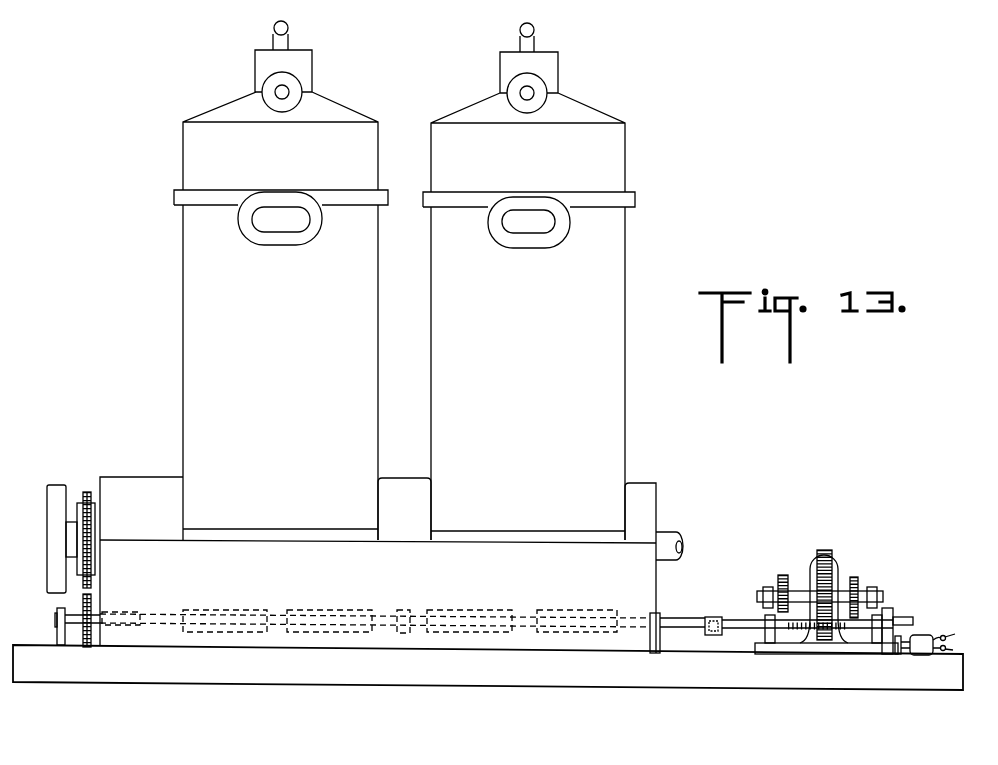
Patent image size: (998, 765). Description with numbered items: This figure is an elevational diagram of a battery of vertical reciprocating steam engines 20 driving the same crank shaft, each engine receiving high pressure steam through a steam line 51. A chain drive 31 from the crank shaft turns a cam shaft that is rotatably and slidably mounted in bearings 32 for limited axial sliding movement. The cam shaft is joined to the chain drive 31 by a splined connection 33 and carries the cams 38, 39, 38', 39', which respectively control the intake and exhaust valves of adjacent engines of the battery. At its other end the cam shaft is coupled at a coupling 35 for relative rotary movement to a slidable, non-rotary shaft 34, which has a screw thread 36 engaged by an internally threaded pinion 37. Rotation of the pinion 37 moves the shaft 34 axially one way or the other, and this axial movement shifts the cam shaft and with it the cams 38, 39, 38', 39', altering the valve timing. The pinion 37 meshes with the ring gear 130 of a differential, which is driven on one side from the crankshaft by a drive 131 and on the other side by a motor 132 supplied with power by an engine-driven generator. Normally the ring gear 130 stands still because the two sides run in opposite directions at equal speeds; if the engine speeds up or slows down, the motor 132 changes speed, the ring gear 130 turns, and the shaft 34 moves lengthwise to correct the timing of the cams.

The vertical reciprocating steam engine 20 is at (368, 256).
The steam line 51 is at (289, 30).
The chain drive 31 is at (91, 592).
The splined connection 33 is at (119, 626).
The cam 38 is at (225, 644).
The cam 39 is at (329, 644).
The bearing 32 is at (398, 633).
The cam 38' is at (469, 644).
The cam 39' is at (577, 644).
The coupling 35 is at (712, 637).
The slidable non-rotary shaft 34 is at (781, 644).
The screw thread 36 is at (803, 632).
The pinion 37 is at (826, 640).
The ring gear 130 is at (826, 548).
The drive 131 is at (783, 575).
The motor 132 is at (922, 640).